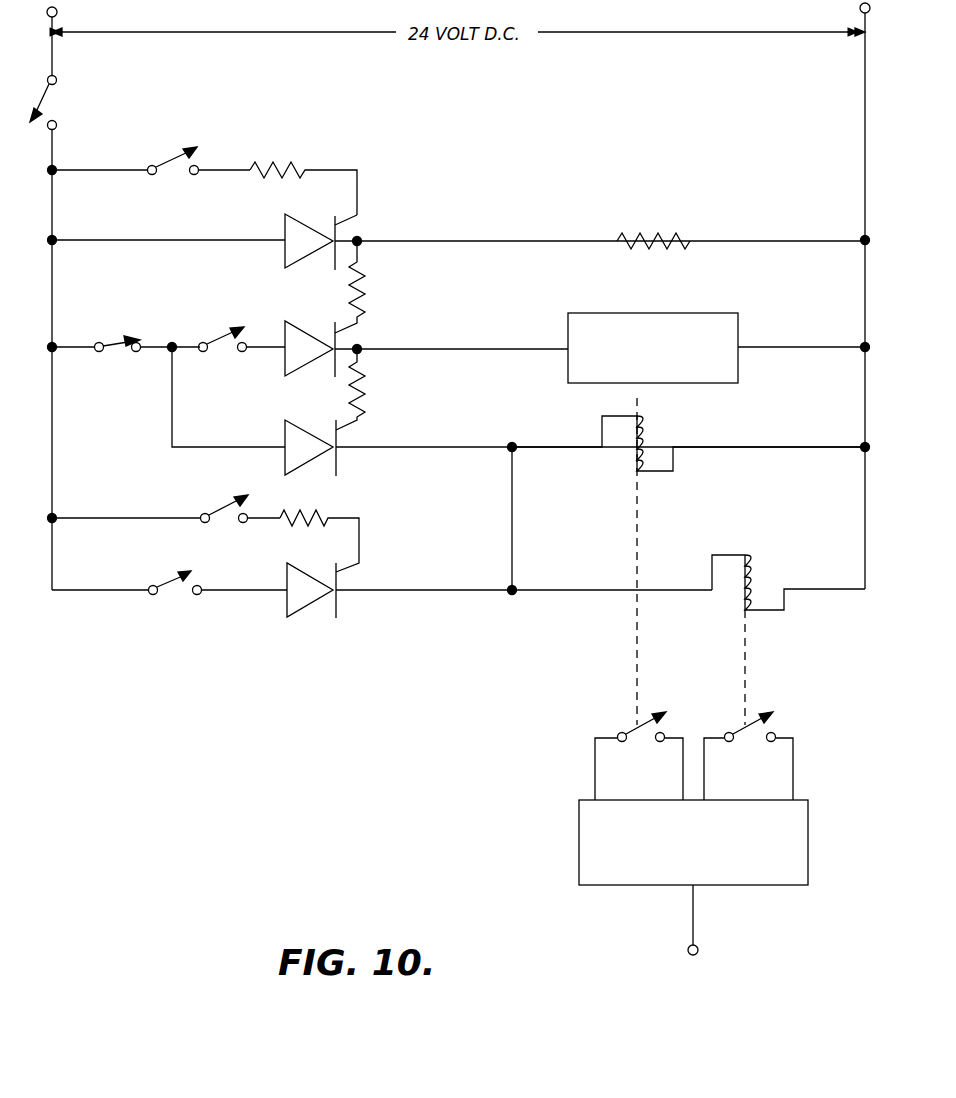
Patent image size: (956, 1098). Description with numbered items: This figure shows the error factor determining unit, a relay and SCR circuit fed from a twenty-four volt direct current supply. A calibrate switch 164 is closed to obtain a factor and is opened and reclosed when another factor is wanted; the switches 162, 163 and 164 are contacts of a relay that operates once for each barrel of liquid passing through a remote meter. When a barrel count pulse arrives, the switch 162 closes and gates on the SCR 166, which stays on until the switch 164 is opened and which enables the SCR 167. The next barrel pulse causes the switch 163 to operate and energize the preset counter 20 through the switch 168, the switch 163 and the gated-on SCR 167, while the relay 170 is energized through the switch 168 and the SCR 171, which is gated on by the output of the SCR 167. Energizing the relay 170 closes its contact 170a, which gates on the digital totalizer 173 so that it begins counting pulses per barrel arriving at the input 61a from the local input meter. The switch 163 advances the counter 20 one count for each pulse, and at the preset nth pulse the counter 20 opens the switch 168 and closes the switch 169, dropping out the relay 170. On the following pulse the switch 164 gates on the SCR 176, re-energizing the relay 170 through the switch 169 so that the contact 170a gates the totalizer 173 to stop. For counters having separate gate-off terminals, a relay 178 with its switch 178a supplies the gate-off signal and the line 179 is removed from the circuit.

The calibrate switch 164 is at (42, 108).
The switch 162 is at (164, 163).
The SCR 166 is at (285, 218).
The SCR 167 is at (285, 325).
The switch 168 is at (113, 344).
The switch 163 is at (212, 342).
The SCR 171 is at (285, 430).
The switch 169 is at (165, 582).
The SCR 176 is at (287, 570).
The line 179 is at (512, 533).
The counter 20 is at (710, 313).
The relay 170 is at (648, 430).
The relay 178 is at (752, 568).
The contact 170a is at (635, 728).
The switch 178a is at (760, 725).
The digital totalizer 173 is at (579, 838).
The input 61a is at (693, 912).